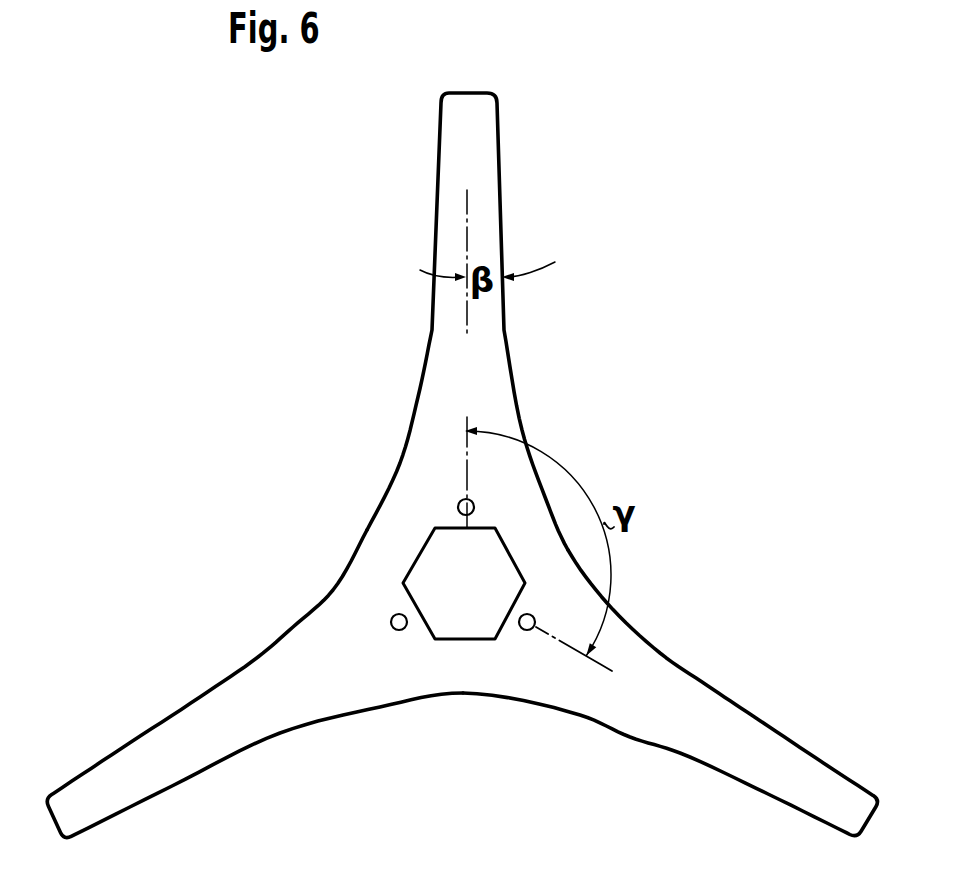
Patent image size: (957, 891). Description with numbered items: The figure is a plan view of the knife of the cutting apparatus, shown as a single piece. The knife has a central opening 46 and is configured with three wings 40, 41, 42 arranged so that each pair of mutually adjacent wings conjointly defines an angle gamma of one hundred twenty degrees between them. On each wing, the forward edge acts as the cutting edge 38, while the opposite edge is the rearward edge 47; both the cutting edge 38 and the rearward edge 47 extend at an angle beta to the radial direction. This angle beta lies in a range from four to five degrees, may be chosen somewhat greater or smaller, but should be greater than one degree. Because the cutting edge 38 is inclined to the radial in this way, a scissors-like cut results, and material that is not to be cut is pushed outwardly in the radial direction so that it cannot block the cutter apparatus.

The cutting edge 38 is at (437, 207).
The wing 40 is at (203, 753).
The wing 41 is at (732, 755).
The wing 42 is at (486, 198).
The central opening 46 is at (438, 552).
The rearward edge 47 is at (497, 150).